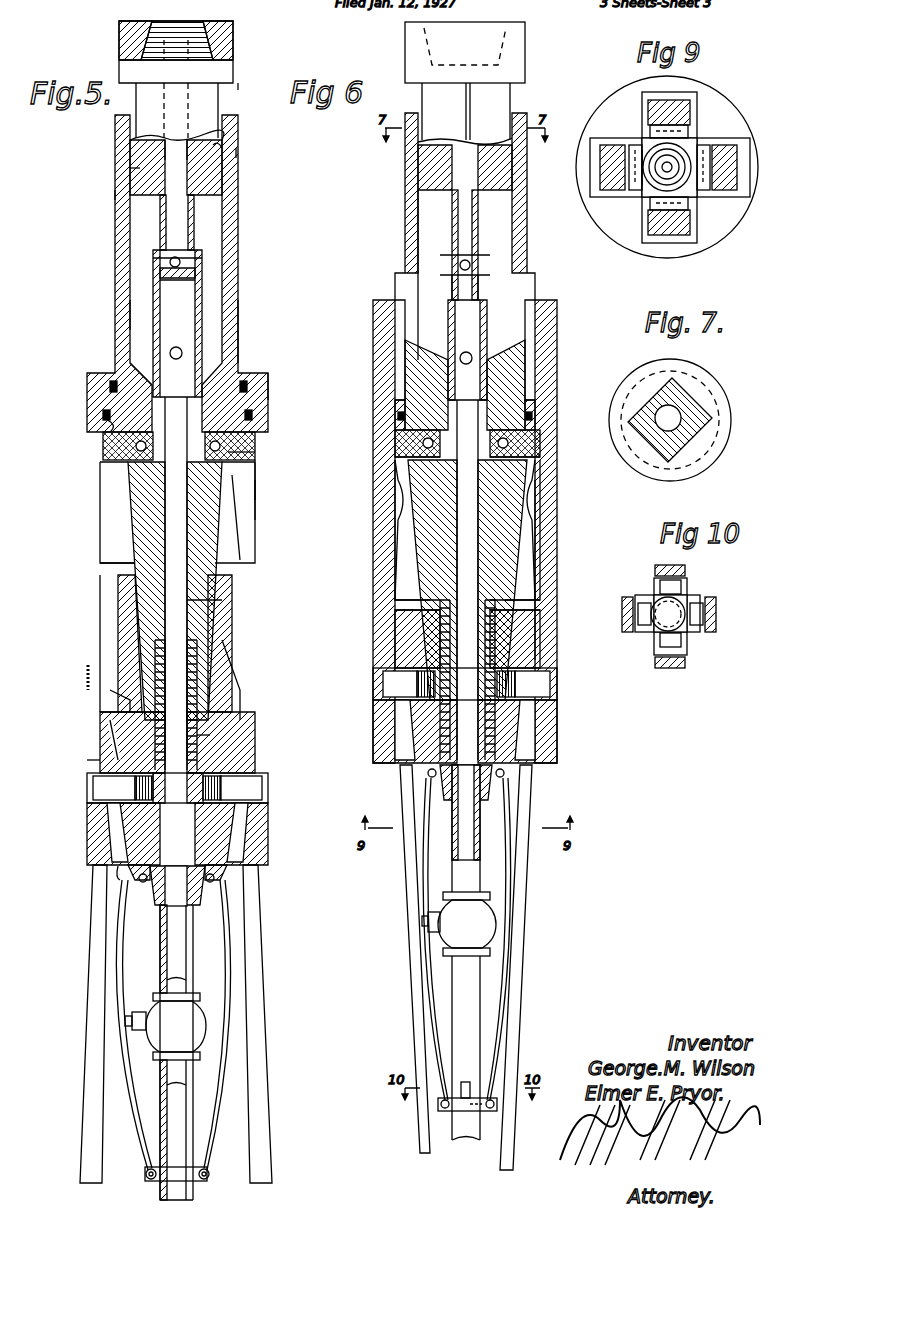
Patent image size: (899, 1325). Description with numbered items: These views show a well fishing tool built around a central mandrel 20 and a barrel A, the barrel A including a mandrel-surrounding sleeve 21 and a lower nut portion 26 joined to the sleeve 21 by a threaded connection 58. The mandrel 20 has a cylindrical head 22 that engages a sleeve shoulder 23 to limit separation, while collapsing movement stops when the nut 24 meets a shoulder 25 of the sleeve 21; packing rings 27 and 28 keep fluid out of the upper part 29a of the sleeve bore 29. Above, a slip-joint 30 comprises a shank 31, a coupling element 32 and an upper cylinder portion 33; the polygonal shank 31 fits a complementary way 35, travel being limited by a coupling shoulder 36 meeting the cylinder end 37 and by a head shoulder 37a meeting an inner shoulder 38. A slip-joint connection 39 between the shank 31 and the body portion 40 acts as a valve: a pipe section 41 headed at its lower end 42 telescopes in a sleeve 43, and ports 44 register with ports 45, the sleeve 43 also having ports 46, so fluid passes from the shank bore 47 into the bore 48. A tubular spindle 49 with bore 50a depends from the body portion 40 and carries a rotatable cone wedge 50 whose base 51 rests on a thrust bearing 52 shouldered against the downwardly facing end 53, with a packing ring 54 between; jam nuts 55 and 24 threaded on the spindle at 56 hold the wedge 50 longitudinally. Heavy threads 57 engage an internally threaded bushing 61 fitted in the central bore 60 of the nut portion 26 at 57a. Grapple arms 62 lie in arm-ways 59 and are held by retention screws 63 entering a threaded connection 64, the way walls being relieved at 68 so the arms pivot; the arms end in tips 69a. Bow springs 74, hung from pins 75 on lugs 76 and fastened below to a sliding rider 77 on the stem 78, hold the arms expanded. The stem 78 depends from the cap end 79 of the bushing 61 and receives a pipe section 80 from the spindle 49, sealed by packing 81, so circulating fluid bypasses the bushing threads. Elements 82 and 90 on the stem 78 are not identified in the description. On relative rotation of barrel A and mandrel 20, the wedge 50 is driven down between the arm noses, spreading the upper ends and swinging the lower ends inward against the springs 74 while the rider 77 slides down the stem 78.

In FIG. 5, the central mandrel 20 is at (238, 345).
In FIG. 6, the central mandrel 20 is at (405, 258).
In FIG. 5, the mandrel-surrounding sleeve 21 is at (262, 478).
In FIG. 5, the cylindrical head 22 is at (252, 408).
In FIG. 6, the cylindrical head 22 is at (525, 395).
In FIG. 5, the sleeve shoulder 23 is at (262, 378).
In FIG. 5, the mandrel-carried nut 24 is at (135, 612).
In FIG. 5, the shoulder of sleeve 25 is at (135, 690).
In FIG. 5, the lower nut portion 26 is at (140, 745).
In FIG. 6, the lower nut portion 26 is at (510, 645).
In FIG. 9, the lower nut portion 26 is at (725, 118).
In FIG. 5, the packing ring 27 is at (110, 380).
In FIG. 5, the packing ring 28 is at (105, 420).
In FIG. 5, the sleeve bore 29 is at (237, 522).
In FIG. 6, the sleeve bore 29 is at (520, 585).
In FIG. 6, the upper part of sleeve bore 29a is at (530, 322).
In FIG. 5, the slip-joint 30 is at (130, 153).
In FIG. 5, the shank 31 is at (148, 98).
In FIG. 6, the shank 31 is at (465, 113).
In FIG. 7, the shank 31 is at (692, 428).
In FIG. 5, the coupling element 32 is at (119, 45).
In FIG. 6, the coupling element 32 is at (512, 62).
In FIG. 5, the upper cylinder portion 33 is at (115, 195).
In FIG. 5, the way 35 is at (218, 145).
In FIG. 5, the coupling shoulder 36 is at (238, 88).
In FIG. 5, the end of cylinder 37 is at (230, 112).
In FIG. 5, the head shoulder 37a is at (238, 152).
In FIG. 5, the annular inner shoulder 38 is at (133, 170).
In FIG. 5, the slip-joint connection 39 is at (140, 318).
In FIG. 6, the slip-joint connection 39 is at (500, 275).
In FIG. 5, the body portion 40 is at (130, 372).
In FIG. 5, the pipe section 41 is at (160, 228).
In FIG. 6, the pipe section 41 is at (465, 222).
In FIG. 5, the headed lower end 42 is at (182, 283).
In FIG. 5, the sleeve 43 is at (153, 300).
In FIG. 6, the sleeve 43 is at (448, 335).
In FIG. 5, the ports 44 is at (181, 263).
In FIG. 5, the ports 45 is at (153, 262).
In FIG. 5, the ports 46 is at (170, 350).
In FIG. 5, the shank bore 47 is at (165, 150).
In FIG. 5, the bore of mandrel body 48 is at (165, 470).
In FIG. 6, the bore of mandrel body 48 is at (467, 580).
In FIG. 5, the tubular spindle 49 is at (160, 530).
In FIG. 6, the tubular spindle 49 is at (470, 495).
In FIG. 5, the wedge member or spreader-cam 50 is at (130, 500).
In FIG. 6, the wedge member or spreader-cam 50 is at (510, 520).
In FIG. 5, the spindle bore 50a is at (145, 548).
In FIG. 5, the base of cone 51 is at (125, 446).
In FIG. 5, the thrust bearing 52 is at (228, 440).
In FIG. 5, the downwardly facing end 53 is at (103, 412).
In FIG. 5, the packing ring 54 is at (235, 452).
In FIG. 5, the jam nut 55 is at (130, 590).
In FIG. 5, the threads 56 is at (222, 605).
In FIG. 5, the heavy threads 57 is at (155, 650).
In FIG. 6, the heavy threads 57 is at (415, 640).
In FIG. 5, the threaded engagement 57a is at (200, 740).
In FIG. 5, the threaded connection 58 is at (92, 678).
In FIG. 5, the arm-ways 59 is at (100, 722).
In FIG. 9, the arm-ways 59 is at (690, 98).
In FIG. 5, the central bore 60 is at (160, 820).
In FIG. 5, the internally threaded bushing 61 is at (100, 760).
In FIG. 6, the internally threaded bushing 61 is at (495, 725).
In FIG. 5, the grapple arms 62 is at (108, 937).
In FIG. 6, the grapple arms 62 is at (515, 925).
In FIG. 9, the grapple arms 62 is at (640, 110).
In FIG. 5, the retention screws 63 is at (245, 787).
In FIG. 6, the retention screws 63 is at (465, 684).
In FIG. 5, the threaded connection 64 is at (125, 805).
In FIG. 5, the cam portions 68 is at (240, 690).
In FIG. 6, the cam portions 68 is at (535, 548).
In FIG. 10, the tips 69a is at (680, 572).
In FIG. 5, the springs 74 is at (120, 988).
In FIG. 6, the springs 74 is at (428, 877).
In FIG. 9, the springs 74 is at (720, 165).
In FIG. 10, the springs 74 is at (683, 586).
In FIG. 5, the pins 75 is at (143, 884).
In FIG. 6, the pins 75 is at (505, 773).
In FIG. 9, the pins 75 is at (700, 138).
In FIG. 6, the lugs 76 is at (428, 773).
In FIG. 9, the lugs 76 is at (640, 135).
In FIG. 5, the sliding ring or rider 77 is at (152, 1165).
In FIG. 6, the sliding ring or rider 77 is at (448, 1112).
In FIG. 10, the sliding ring or rider 77 is at (690, 632).
In FIG. 5, the stem 78 is at (180, 1138).
In FIG. 6, the stem 78 is at (470, 1015).
In FIG. 10, the stem 78 is at (658, 624).
In FIG. 5, the cap end 79 is at (203, 918).
In FIG. 5, the pipe section 80 is at (118, 880).
In FIG. 6, the pipe section 80 is at (470, 810).
In FIG. 5, the packing 81 is at (205, 898).
In FIG. 5, the valve 82 is at (176, 1026).
In FIG. 6, the valve 82 is at (467, 924).
In FIG. 5, the valve stem 90 is at (130, 1022).
In FIG. 6, the valve stem 90 is at (432, 930).
In FIG. 5, the barrel A is at (252, 502).